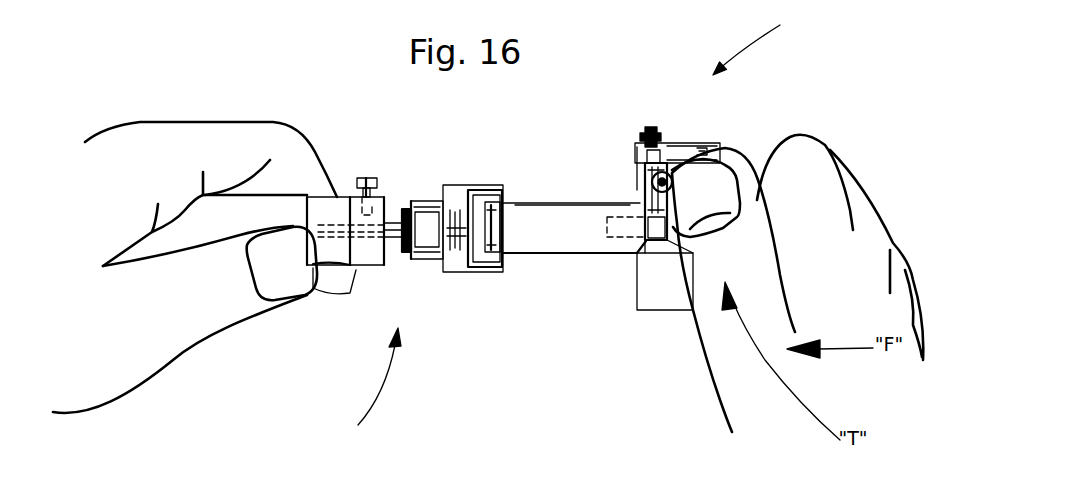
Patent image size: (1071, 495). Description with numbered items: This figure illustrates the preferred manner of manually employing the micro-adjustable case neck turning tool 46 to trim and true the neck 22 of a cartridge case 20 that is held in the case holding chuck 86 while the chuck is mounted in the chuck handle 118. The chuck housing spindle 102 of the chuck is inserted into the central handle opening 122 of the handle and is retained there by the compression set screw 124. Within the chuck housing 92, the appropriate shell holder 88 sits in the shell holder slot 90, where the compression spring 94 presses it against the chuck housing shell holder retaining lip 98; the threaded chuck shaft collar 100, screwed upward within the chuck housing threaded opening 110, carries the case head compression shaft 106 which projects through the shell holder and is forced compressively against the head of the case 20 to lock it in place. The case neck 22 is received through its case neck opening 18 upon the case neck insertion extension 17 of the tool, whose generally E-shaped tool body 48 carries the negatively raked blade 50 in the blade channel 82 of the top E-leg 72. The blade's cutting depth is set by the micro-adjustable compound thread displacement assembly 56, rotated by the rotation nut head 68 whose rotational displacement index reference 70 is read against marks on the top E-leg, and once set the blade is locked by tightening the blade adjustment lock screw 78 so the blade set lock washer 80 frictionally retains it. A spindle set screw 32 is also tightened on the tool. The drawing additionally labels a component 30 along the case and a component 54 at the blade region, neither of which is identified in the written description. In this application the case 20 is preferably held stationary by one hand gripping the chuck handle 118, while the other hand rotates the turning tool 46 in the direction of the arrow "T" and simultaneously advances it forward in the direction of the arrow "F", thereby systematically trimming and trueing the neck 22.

The case neck insertion extension 17 is at (610, 217).
The case neck opening 18 is at (668, 223).
The cartridge case 20 is at (540, 257).
The case neck 22 is at (645, 262).
The tubular member 30 is at (585, 235).
The spindle set screw 32 is at (683, 165).
The micro-adjustable case neck turning tool 46 is at (764, 42).
The tool body 48 is at (670, 293).
The negatively raked blade 50 is at (668, 203).
The slot 54 is at (643, 210).
The micro-adjustable compound thread displacement assembly 56 is at (685, 123).
The rotation nut head 68 is at (643, 127).
The rotational displacement index reference 70 is at (657, 127).
The top E-leg 72 is at (705, 138).
The blade adjustment lock screw 78 is at (677, 178).
The blade set lock washer 80 is at (717, 158).
The top E-leg blade channel 82 is at (637, 190).
The case holding chuck 86 is at (368, 388).
The shell holder 88 is at (480, 193).
The shell holder slot 90 is at (487, 277).
The chuck housing 92 is at (463, 277).
The compression spring 94 is at (447, 197).
The chuck housing shell holder retaining lip 98 is at (503, 197).
The threaded chuck shaft collar 100 is at (403, 255).
The chuck housing spindle 102 is at (390, 275).
The case head compression shaft 106 is at (478, 197).
The chuck housing threaded opening 110 is at (420, 197).
The chuck handle 118 is at (287, 210).
The central handle opening 122 is at (324, 220).
The compression set screw 124 is at (365, 177).